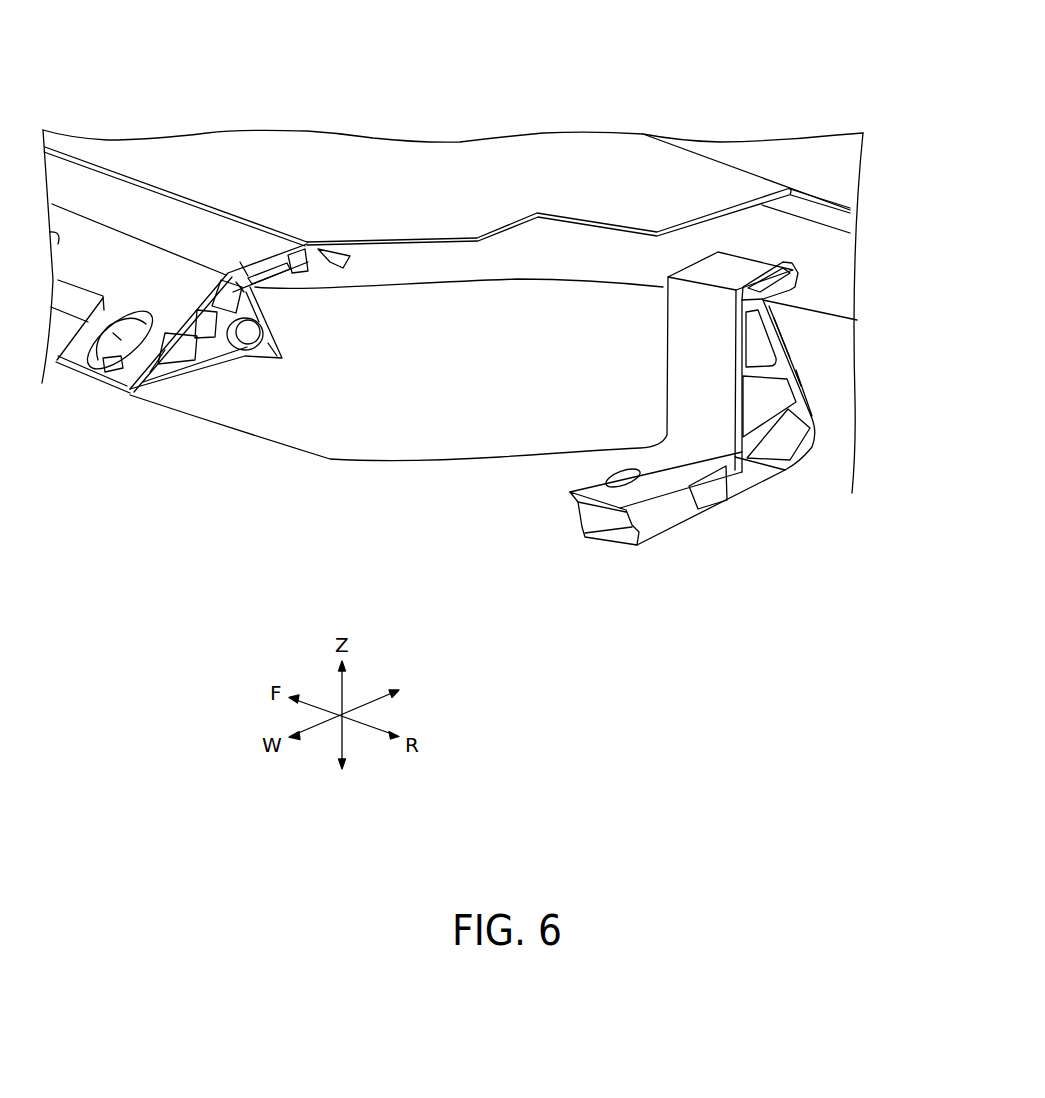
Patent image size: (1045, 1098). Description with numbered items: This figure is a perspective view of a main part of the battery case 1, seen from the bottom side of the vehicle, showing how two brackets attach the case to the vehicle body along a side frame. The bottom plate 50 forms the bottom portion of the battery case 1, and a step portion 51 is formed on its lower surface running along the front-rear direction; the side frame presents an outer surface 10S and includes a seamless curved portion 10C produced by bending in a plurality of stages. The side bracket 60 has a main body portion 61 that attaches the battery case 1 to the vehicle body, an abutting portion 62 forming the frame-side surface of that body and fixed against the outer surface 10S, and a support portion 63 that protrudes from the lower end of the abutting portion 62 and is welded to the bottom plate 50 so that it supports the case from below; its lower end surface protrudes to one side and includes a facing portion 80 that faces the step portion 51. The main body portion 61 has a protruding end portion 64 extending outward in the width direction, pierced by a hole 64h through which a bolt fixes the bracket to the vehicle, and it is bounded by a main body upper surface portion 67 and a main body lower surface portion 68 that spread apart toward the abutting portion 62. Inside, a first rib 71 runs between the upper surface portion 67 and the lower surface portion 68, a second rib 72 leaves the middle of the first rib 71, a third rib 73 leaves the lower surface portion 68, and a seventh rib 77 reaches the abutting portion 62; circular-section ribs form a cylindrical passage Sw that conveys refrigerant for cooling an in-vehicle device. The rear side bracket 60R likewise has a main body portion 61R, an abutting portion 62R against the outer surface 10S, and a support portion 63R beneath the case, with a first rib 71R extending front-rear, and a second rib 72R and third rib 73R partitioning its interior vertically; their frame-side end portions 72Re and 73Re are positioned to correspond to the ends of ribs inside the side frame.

The battery case 1 is at (750, 84).
The bottom plate 50 is at (493, 155).
The step portion 51 is at (258, 240).
The facing portion 80 is at (308, 235).
The main body lower surface portion 68 is at (128, 297).
The curved portion 10C is at (475, 417).
The outer surface 10S is at (555, 440).
The side bracket 60 is at (125, 412).
The support portion 63 is at (235, 247).
The seventh rib 77 is at (233, 292).
The third rib 73 is at (230, 262).
The second rib 72 is at (212, 365).
The first rib 71 is at (178, 386).
The main body portion 61 is at (202, 388).
The main body upper surface portion 67 is at (160, 398).
The abutting portion 62 is at (290, 344).
The cylindrical passage Sw is at (255, 352).
The protruding end portion 64 is at (112, 394).
The hole 64h is at (88, 374).
The rear side bracket 60R is at (733, 520).
The support portion 63R is at (750, 268).
The abutting portion 62R is at (822, 385).
The third rib 73R is at (755, 355).
The second rib 72R is at (760, 418).
The end portion 73Re is at (782, 343).
The end portion 72Re is at (798, 371).
The main body portion 61R is at (658, 517).
The first rib 71R is at (697, 504).